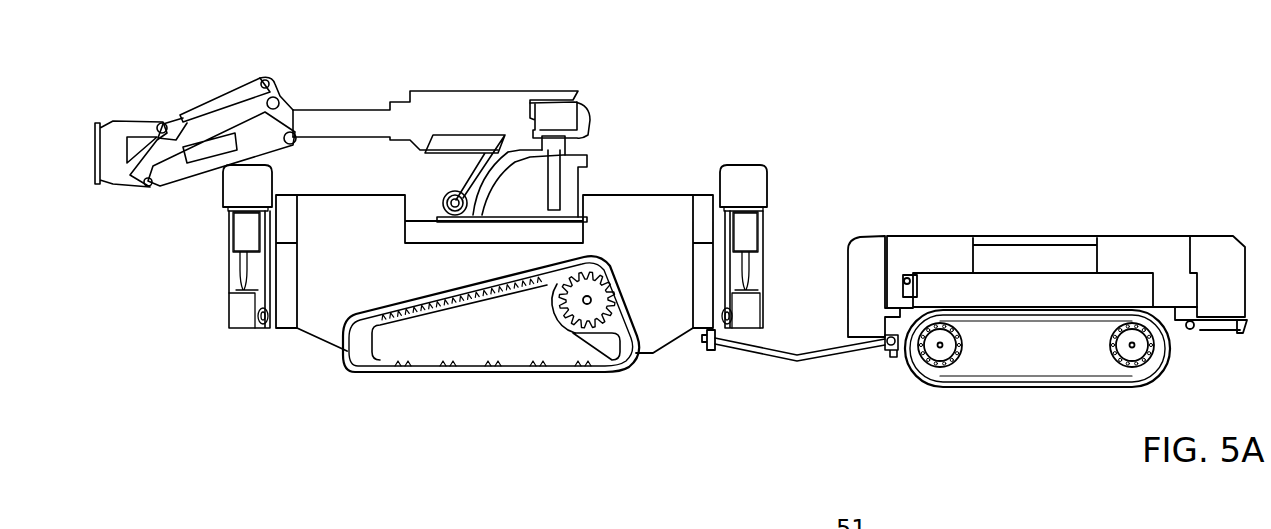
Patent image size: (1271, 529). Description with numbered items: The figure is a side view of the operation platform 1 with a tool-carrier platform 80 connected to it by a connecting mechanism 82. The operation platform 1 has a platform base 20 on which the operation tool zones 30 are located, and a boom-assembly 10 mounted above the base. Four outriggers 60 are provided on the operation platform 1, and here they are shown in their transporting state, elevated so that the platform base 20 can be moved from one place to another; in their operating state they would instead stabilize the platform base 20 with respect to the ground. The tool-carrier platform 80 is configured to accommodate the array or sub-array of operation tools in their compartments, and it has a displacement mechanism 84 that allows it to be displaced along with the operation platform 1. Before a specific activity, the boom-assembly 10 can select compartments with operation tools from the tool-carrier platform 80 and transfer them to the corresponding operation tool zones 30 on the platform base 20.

The operation platform 1 is at (733, 120).
The boom-assembly 10 is at (480, 120).
The platform base 20 is at (667, 223).
The operation tool zones 30 is at (333, 237).
The outriggers 60 is at (243, 229).
The tool-carrier platform 80 is at (1145, 253).
The connecting mechanism 82 is at (778, 357).
The displacement mechanism 84 is at (1027, 347).